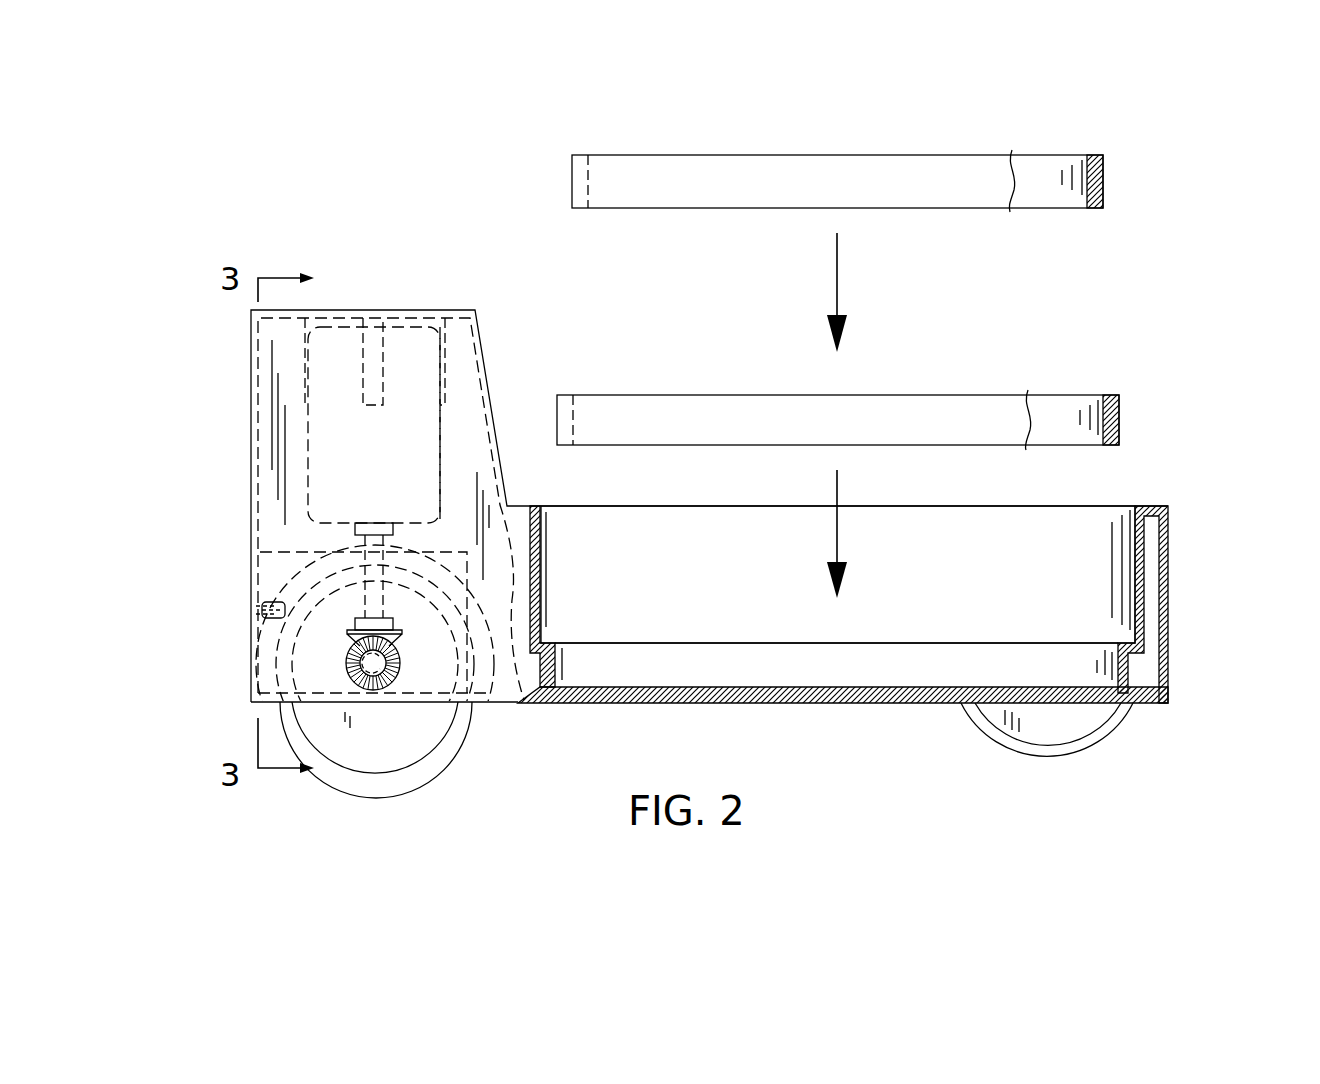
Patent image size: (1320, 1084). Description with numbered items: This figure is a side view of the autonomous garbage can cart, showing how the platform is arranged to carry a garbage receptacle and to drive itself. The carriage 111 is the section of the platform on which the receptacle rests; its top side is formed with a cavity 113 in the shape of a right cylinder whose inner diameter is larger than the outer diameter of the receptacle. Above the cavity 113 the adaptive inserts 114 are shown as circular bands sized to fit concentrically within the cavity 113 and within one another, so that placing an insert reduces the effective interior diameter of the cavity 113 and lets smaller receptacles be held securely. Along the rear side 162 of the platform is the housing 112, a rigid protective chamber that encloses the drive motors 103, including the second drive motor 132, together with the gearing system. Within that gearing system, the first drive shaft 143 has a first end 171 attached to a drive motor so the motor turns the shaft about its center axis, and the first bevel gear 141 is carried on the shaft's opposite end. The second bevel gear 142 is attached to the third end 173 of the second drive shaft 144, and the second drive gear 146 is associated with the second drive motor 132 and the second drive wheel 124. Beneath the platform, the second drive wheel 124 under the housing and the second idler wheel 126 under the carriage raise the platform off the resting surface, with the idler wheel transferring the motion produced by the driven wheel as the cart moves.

The drive motors 103 is at (400, 355).
The carriage 111 is at (1170, 647).
The housing 112 is at (350, 310).
The cavity 113 is at (1052, 555).
The adaptive inserts 114 is at (1103, 200).
The second drive wheel 124 is at (405, 758).
The second idler wheel 126 is at (1050, 760).
The second drive motor 132 is at (418, 355).
The first bevel gear 141 is at (348, 672).
The second bevel gear 142 is at (350, 643).
The first drive shaft 143 is at (363, 597).
The second drive shaft 144 is at (387, 603).
The second drive gear 146 is at (377, 588).
The rear side 162 is at (236, 365).
The first end 171 is at (370, 542).
The third end 173 is at (368, 672).